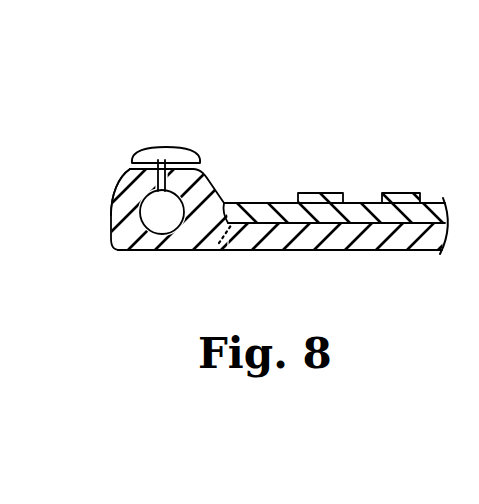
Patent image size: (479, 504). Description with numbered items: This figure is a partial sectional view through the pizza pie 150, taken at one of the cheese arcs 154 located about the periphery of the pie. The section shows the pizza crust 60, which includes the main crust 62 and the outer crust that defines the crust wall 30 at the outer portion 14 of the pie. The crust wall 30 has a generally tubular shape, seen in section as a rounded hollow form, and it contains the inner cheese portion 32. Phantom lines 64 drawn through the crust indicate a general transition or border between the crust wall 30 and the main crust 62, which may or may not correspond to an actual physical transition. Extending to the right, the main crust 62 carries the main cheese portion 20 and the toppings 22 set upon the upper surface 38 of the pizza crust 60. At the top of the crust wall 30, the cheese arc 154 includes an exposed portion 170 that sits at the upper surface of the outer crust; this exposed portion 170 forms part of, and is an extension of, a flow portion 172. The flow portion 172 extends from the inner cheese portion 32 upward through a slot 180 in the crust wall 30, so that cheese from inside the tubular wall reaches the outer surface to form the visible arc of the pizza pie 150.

The outer portion 14 is at (110, 208).
The crust wall 30 is at (110, 232).
The inner cheese portion 32 is at (170, 222).
The cheese arc 154 is at (144, 146).
The exposed portion 170 is at (168, 147).
The flow portion 172 is at (129, 176).
The slot 180 is at (192, 176).
The upper surface 38 is at (252, 202).
The toppings 22 is at (313, 193).
The main cheese portion 20 is at (350, 202).
The pizza pie 150 is at (298, 113).
The main crust 62 is at (370, 237).
The phantom lines 64 is at (226, 225).
The pizza crust 60 is at (407, 250).